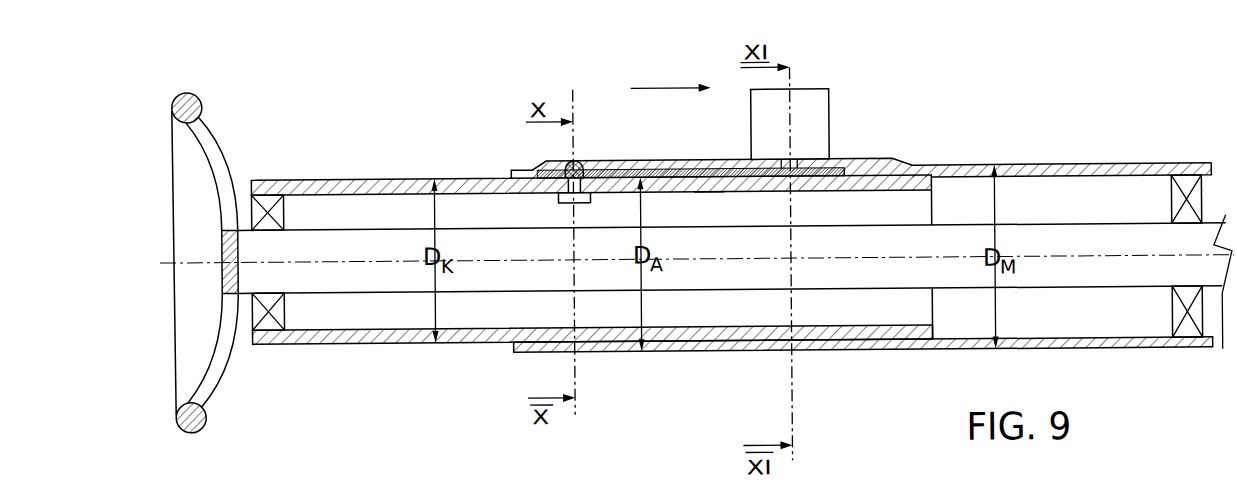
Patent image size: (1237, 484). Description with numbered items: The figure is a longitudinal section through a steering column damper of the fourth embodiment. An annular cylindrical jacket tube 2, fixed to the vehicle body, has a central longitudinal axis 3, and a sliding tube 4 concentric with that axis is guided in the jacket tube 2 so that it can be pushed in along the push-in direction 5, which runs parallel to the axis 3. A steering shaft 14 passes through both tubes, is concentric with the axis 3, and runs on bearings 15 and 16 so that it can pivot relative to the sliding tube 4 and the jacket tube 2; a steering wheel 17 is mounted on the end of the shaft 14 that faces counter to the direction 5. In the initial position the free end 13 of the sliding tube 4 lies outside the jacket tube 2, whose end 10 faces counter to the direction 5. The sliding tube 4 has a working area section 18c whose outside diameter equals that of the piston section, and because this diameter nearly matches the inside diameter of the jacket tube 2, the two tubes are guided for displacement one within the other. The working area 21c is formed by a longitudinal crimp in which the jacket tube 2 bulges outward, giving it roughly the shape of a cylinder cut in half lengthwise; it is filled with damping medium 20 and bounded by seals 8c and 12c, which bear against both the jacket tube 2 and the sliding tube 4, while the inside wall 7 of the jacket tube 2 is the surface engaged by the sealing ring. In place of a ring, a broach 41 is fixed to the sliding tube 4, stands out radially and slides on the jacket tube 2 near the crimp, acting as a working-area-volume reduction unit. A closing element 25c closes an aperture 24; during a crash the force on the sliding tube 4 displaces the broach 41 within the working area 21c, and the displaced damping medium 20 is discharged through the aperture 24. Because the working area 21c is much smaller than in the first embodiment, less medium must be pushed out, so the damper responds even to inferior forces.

The jacket tube 2 is at (1044, 172).
The central longitudinal axis 3 is at (1053, 261).
The sliding tube 4 is at (382, 190).
The push-in direction 5 is at (678, 83).
The inside wall 7 is at (1105, 183).
The seal 8c is at (838, 177).
The end of the jacket tube 10 is at (521, 172).
The seal 12c is at (566, 171).
The free end of the sliding tube 13 is at (258, 188).
The steering shaft 14 is at (365, 285).
The bearing 15 is at (270, 326).
The bearing 16 is at (1187, 333).
The steering wheel 17 is at (192, 418).
The working area section 18c is at (708, 190).
The damping medium 20 is at (672, 175).
The working area 21c is at (713, 176).
The aperture 24 is at (797, 163).
The closing element 25c is at (813, 115).
The broach 41 is at (563, 199).